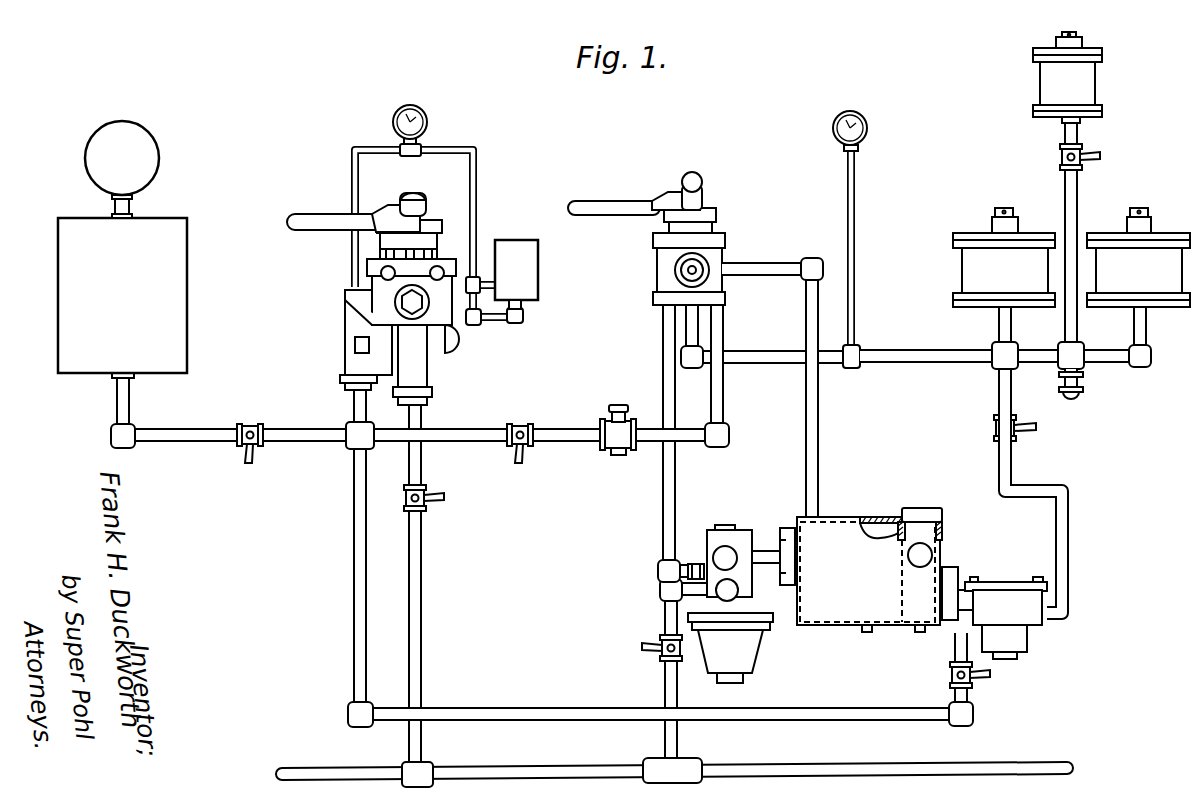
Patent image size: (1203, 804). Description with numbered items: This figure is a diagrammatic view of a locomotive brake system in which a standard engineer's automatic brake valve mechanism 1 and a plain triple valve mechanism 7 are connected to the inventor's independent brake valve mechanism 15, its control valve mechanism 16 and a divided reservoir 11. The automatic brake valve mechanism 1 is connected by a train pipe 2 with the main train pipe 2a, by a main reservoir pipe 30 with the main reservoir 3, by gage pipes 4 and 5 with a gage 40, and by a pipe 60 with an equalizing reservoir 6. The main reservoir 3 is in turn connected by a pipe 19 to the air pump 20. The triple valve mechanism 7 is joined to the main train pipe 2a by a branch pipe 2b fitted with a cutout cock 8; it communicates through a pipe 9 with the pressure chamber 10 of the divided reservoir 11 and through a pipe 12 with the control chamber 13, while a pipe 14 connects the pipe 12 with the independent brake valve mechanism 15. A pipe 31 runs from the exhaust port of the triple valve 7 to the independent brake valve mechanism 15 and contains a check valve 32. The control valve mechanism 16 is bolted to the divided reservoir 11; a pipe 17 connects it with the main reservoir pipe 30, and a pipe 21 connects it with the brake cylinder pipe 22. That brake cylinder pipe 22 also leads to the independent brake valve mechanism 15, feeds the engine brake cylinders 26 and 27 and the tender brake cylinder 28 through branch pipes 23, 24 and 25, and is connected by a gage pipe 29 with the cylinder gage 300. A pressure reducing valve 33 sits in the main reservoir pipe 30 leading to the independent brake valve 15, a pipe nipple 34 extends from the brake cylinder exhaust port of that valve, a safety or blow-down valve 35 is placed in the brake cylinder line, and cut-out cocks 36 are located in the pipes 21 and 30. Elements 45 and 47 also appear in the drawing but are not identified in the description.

The automatic brake valve mechanism 1 is at (373, 299).
The train pipe 2 is at (421, 620).
The main train pipe 2a is at (580, 772).
The branch pipe 2b is at (665, 688).
The main reservoir 3 is at (122, 295).
The gage pipe 4 is at (351, 150).
The gage pipe 5 is at (478, 148).
The equalizing reservoir 6 is at (516, 274).
The plain triple valve mechanism 7 is at (730, 597).
The cutout cock 8 is at (660, 645).
The pipe 9 is at (758, 552).
The pressure chamber 10 is at (878, 517).
The divided reservoir 11 is at (860, 583).
The pipe 12 is at (847, 563).
The control chamber 13 is at (940, 521).
The pipe 14 is at (780, 257).
The independent brake valve mechanism 15 is at (715, 225).
The control valve mechanism 16 is at (994, 606).
The pipe 17 is at (354, 580).
The pipe 19 is at (113, 206).
The air pump 20 is at (122, 158).
The pipe 21 is at (1053, 526).
The brake cylinder pipe 22 is at (960, 343).
The branch pipe 23 is at (998, 330).
The branch pipe 24 is at (1141, 333).
The branch pipe 25 is at (1077, 203).
The engine brake cylinder 26 is at (1004, 257).
The engine brake cylinder 27 is at (1138, 257).
The tender brake cylinder 28 is at (1067, 74).
The gage pipe 29 is at (864, 256).
The main reservoir pipe 30 is at (190, 440).
The pipe 31 is at (663, 490).
The check valve 32 is at (690, 568).
The pressure reducing valve 33 is at (612, 420).
The pipe nipple 34 is at (687, 326).
The safety or blow-down valve 35 is at (1080, 383).
The cut-out cocks 36 is at (255, 448).
The gage 40 is at (426, 130).
The handle 45 is at (600, 212).
The pipe 47 is at (785, 722).
The pipe 60 is at (500, 318).
The cylinder gage 300 is at (869, 129).